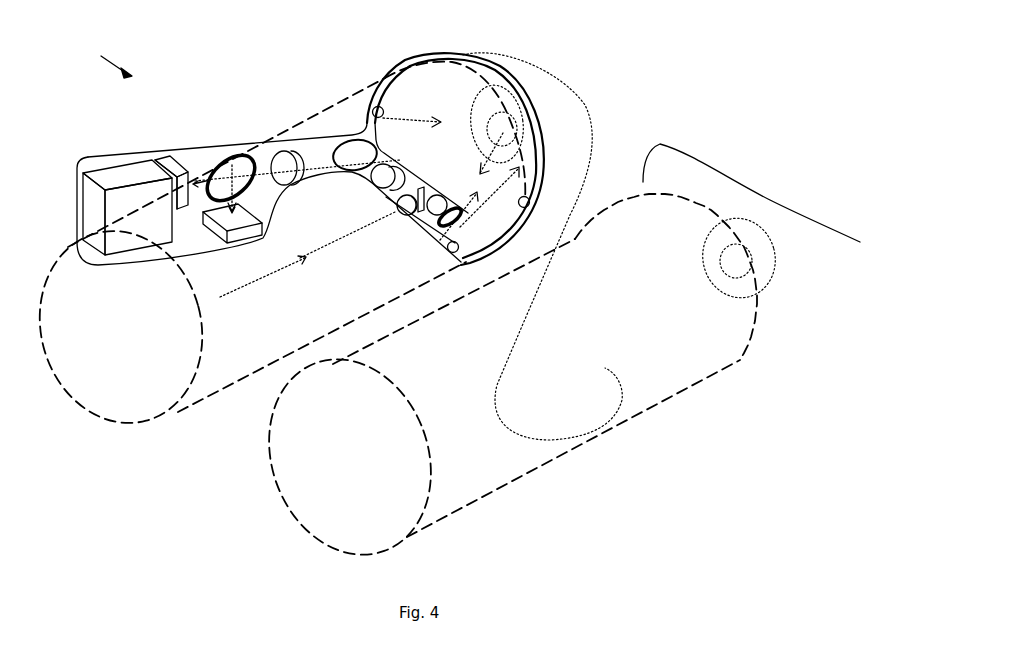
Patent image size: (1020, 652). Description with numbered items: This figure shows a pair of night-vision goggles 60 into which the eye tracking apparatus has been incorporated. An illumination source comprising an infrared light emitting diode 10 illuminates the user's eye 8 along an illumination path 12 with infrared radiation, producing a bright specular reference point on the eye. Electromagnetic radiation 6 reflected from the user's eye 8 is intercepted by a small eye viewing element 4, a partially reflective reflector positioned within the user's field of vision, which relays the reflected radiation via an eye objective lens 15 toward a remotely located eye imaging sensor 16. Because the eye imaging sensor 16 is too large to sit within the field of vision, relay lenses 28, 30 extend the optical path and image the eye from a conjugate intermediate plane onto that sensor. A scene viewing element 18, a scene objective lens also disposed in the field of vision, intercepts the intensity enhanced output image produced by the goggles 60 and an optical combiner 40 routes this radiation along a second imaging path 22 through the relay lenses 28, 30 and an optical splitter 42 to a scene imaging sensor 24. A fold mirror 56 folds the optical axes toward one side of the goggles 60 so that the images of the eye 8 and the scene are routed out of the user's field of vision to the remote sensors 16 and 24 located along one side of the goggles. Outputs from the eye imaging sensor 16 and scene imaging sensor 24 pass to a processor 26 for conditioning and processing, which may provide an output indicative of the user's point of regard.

The night-vision goggles 60 is at (105, 58).
The processor 26 is at (122, 162).
The eye imaging sensor 16 is at (171, 156).
The optical splitter 42 is at (229, 158).
The relay lens 28 is at (293, 186).
The fold mirror 56 is at (346, 172).
The relay lens 30 is at (395, 170).
The optical combiner 40 is at (423, 193).
The scene viewing element 18 is at (398, 204).
The eye objective lens 15 is at (433, 214).
The eye viewing element 4 is at (450, 230).
The scene imaging sensor 24 is at (240, 242).
The second imaging path 22 is at (253, 281).
The infrared light emitting diode 10 is at (373, 109).
The illumination path 12 is at (466, 222).
The electromagnetic radiation 6 is at (483, 174).
The user's eye 8 is at (540, 127).